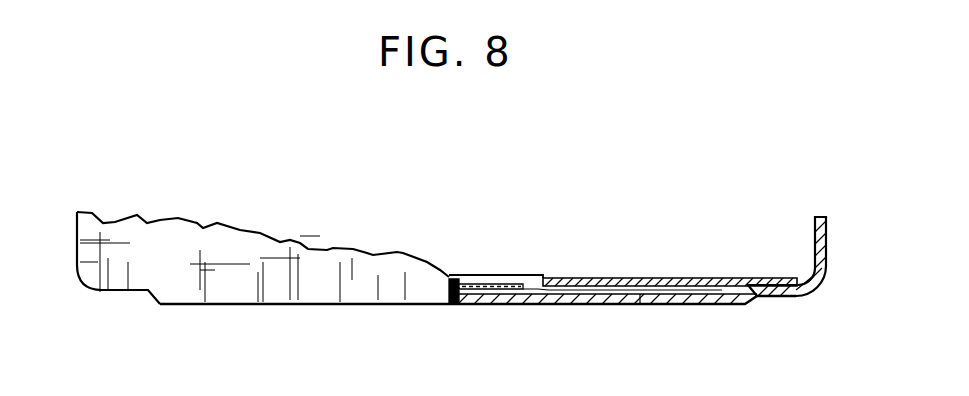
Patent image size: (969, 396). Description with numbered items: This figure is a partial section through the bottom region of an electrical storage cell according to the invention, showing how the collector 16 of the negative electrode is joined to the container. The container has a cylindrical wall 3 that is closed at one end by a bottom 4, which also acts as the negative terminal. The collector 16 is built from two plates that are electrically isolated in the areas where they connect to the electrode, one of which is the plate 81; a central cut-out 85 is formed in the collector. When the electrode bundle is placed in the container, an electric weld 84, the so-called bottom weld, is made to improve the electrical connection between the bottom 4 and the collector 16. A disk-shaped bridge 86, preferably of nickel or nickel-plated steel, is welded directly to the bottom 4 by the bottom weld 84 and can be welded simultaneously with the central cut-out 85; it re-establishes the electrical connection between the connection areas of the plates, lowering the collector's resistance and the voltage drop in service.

The cylindrical wall 3 is at (820, 242).
The bottom 4 is at (563, 308).
The collector 16 is at (482, 276).
The plate 81 is at (733, 282).
The electric weld 84 is at (448, 287).
The central cut-out 85 is at (507, 283).
The bridge 86 is at (643, 306).